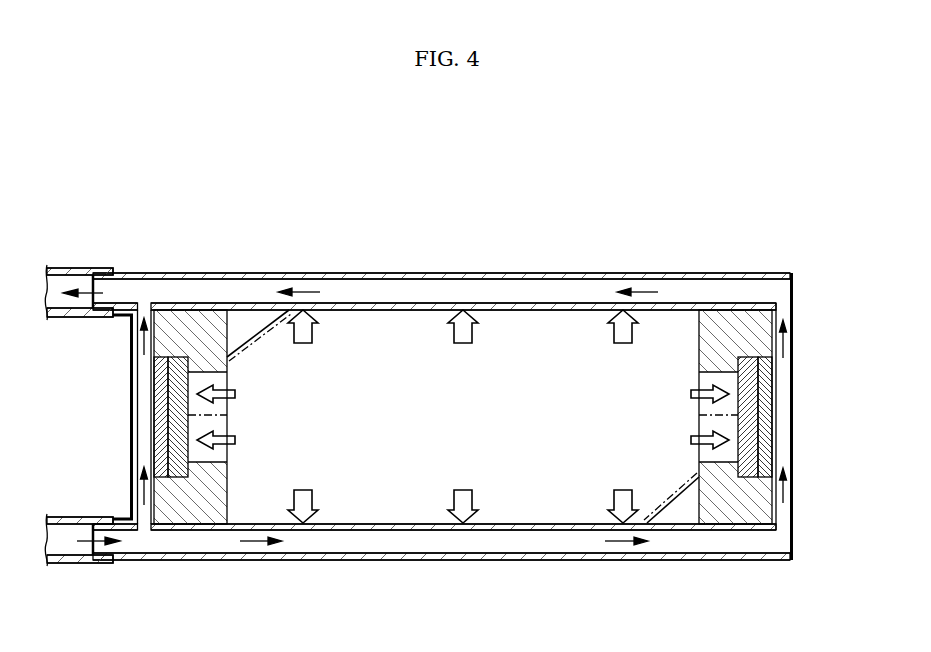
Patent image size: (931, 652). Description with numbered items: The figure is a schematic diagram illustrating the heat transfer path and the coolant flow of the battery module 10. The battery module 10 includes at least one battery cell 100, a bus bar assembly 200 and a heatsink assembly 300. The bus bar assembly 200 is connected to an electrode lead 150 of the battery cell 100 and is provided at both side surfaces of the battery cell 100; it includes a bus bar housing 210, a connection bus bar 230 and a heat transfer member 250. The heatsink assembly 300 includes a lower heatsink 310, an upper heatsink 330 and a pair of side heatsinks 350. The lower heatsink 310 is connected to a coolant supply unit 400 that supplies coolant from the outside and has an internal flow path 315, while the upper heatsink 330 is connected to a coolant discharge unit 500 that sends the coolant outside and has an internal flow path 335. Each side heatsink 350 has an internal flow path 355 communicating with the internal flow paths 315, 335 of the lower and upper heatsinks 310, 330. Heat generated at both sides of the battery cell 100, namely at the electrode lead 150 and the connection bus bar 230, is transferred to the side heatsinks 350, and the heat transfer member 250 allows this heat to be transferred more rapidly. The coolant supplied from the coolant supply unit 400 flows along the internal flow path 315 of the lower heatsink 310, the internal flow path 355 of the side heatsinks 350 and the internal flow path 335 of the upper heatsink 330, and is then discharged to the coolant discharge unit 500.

The battery module 10 is at (118, 183).
The battery cell 100 is at (362, 342).
The electrode lead 150 is at (215, 377).
The bus bar assembly 200 is at (197, 307).
The bus bar housing 210 is at (178, 330).
The connection bus bar 230 is at (177, 413).
The heat transfer member 250 is at (162, 382).
The heatsink assembly 300 is at (565, 271).
The lower heatsink 310 is at (432, 560).
The internal flow path 315 is at (512, 542).
The upper heatsink 330 is at (430, 275).
The internal flow path 335 is at (508, 292).
The side heatsink 350 is at (135, 486).
The internal flow path 355 is at (146, 454).
The coolant supply unit 400 is at (76, 565).
The coolant discharge unit 500 is at (75, 268).